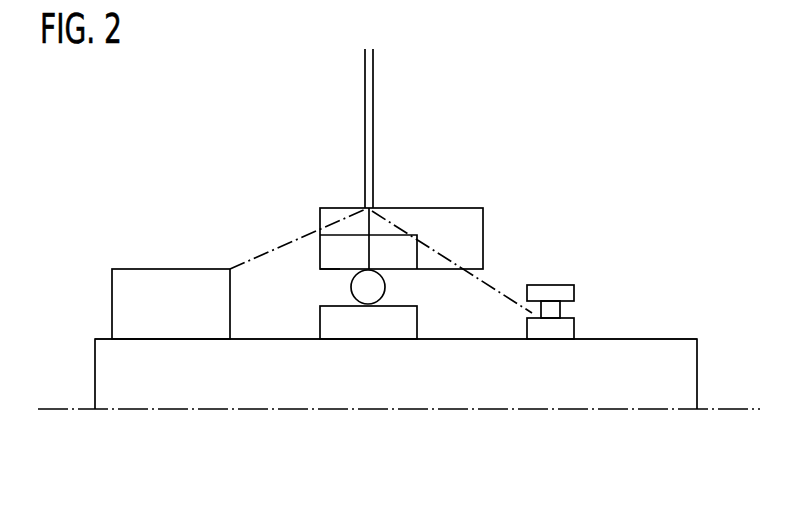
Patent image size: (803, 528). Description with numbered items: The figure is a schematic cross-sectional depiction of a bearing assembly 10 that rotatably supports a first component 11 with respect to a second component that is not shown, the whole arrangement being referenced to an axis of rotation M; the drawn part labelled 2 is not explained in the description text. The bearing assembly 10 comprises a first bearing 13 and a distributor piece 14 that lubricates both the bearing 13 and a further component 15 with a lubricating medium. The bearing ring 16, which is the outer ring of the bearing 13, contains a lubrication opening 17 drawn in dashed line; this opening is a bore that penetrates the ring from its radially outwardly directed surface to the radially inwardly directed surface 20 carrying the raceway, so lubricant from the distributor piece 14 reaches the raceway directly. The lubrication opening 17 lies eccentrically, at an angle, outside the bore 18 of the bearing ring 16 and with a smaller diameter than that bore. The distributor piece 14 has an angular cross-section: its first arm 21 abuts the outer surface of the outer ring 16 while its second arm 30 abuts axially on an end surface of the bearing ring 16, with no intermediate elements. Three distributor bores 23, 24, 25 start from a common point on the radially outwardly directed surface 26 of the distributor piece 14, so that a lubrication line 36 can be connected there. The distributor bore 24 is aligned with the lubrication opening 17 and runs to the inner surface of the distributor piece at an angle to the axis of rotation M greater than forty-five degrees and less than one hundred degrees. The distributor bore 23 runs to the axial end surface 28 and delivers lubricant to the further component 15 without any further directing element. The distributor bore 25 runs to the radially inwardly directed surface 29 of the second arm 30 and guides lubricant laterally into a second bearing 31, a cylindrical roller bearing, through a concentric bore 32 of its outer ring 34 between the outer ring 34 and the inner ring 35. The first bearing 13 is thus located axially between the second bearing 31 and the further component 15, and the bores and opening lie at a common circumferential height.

The workpiece holder insert 2 is at (419, 254).
The bearing assembly 10 is at (459, 113).
The first component 11 is at (249, 443).
The bearing 13 is at (371, 352).
The distributor piece 14 is at (434, 222).
The further component 15 is at (118, 301).
The bearing ring 16 is at (397, 259).
The lubrication opening 17 is at (364, 235).
The bore 18 is at (345, 283).
The radially inwardly directed surface 20 is at (320, 272).
The first arm 21 is at (376, 213).
The distributor bore 23 is at (238, 262).
The distributor bore 24 is at (356, 211).
The distributor bore 25 is at (485, 280).
The radially outwardly directed surface 26 is at (406, 207).
The axial end surface 28 is at (355, 213).
The radially inwardly directed surface 29 is at (447, 270).
The second arm 30 is at (445, 263).
The second bearing 31 is at (579, 303).
The concentric bore 32 is at (574, 319).
The outer ring 34 is at (550, 292).
The inner ring 35 is at (550, 330).
The lubrication line 36 is at (364, 62).
The axis of rotation M is at (741, 409).